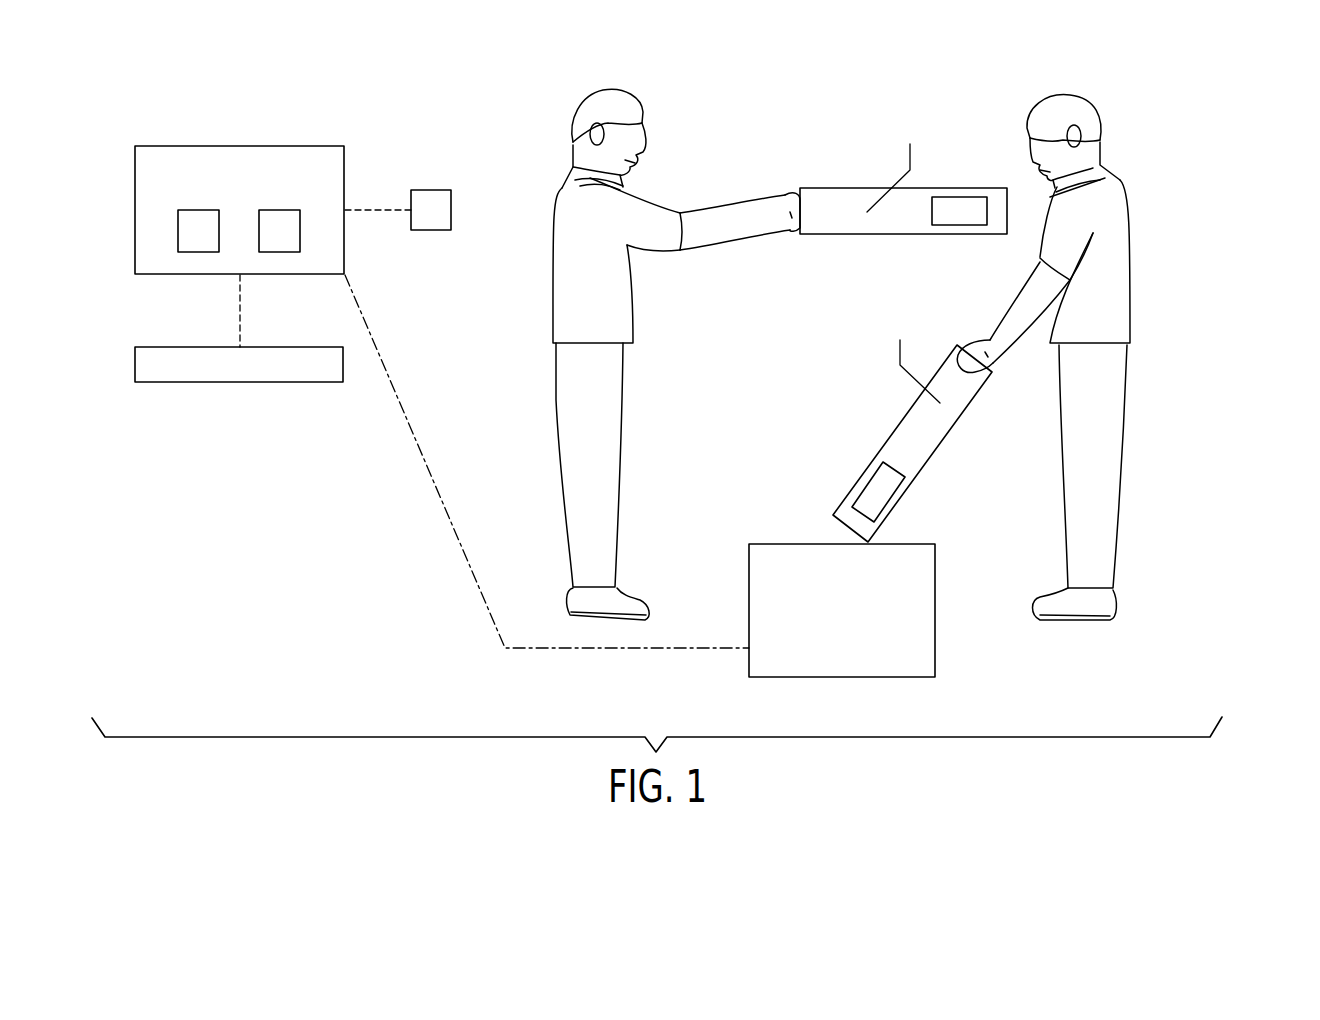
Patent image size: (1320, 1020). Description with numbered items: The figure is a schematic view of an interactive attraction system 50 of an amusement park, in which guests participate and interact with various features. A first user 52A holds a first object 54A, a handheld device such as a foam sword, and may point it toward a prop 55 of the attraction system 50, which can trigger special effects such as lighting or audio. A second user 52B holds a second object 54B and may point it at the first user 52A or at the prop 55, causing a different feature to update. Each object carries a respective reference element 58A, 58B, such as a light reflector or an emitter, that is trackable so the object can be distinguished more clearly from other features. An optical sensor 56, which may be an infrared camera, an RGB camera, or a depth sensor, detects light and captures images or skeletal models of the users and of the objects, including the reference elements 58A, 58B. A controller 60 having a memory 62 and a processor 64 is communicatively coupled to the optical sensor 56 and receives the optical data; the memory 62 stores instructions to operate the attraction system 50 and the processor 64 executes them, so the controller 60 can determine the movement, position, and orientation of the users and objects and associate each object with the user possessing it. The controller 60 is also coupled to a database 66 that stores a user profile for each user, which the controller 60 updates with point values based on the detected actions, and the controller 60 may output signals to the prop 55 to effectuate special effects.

The interactive attraction system 50 is at (1234, 174).
The first user 52A is at (1088, 103).
The second user 52B is at (632, 94).
The first object 54A is at (893, 432).
The second object 54B is at (853, 188).
The prop 55 is at (935, 578).
The optical sensor 56 is at (292, 382).
The reference element 58A is at (867, 482).
The reference element 58B is at (947, 226).
The controller 60 is at (292, 146).
The memory 62 is at (198, 252).
The processor 64 is at (281, 252).
The database 66 is at (440, 190).